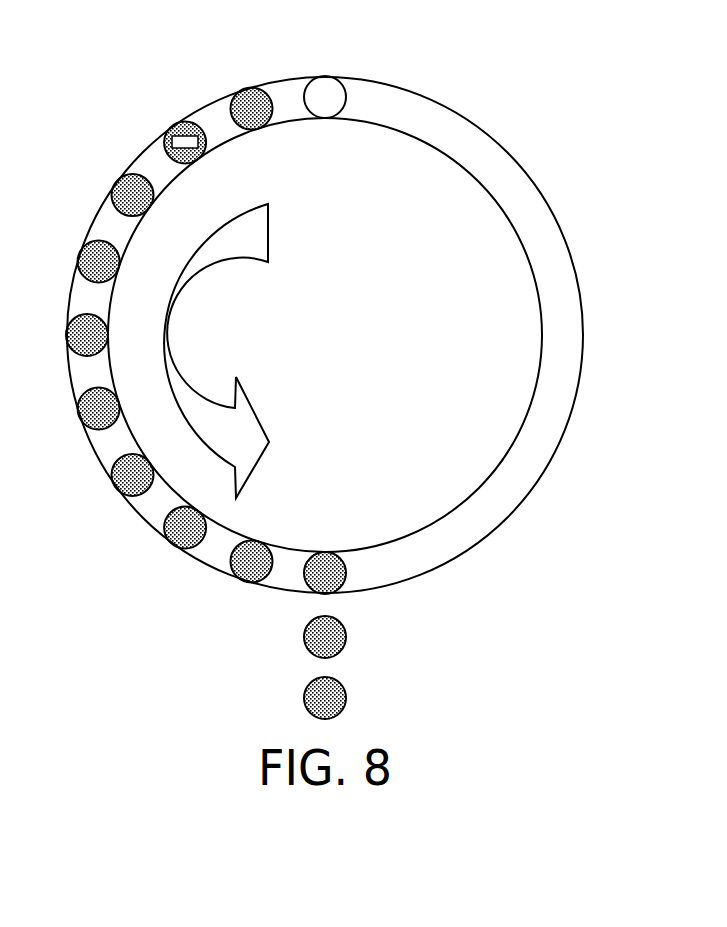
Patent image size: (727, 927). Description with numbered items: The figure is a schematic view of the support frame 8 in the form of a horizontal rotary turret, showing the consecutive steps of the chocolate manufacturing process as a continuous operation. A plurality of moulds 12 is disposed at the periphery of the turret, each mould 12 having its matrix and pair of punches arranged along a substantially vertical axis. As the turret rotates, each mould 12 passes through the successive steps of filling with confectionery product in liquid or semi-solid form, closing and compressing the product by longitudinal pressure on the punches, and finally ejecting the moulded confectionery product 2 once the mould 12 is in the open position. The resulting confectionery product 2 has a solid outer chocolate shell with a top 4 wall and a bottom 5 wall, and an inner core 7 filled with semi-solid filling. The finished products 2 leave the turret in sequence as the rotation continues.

The support frame 8 is at (435, 98).
The mould 12 is at (323, 88).
The bottom wall 5 is at (248, 90).
The inner core 7 is at (170, 138).
The top wall 4 is at (168, 545).
The confectionery product 2 is at (346, 698).